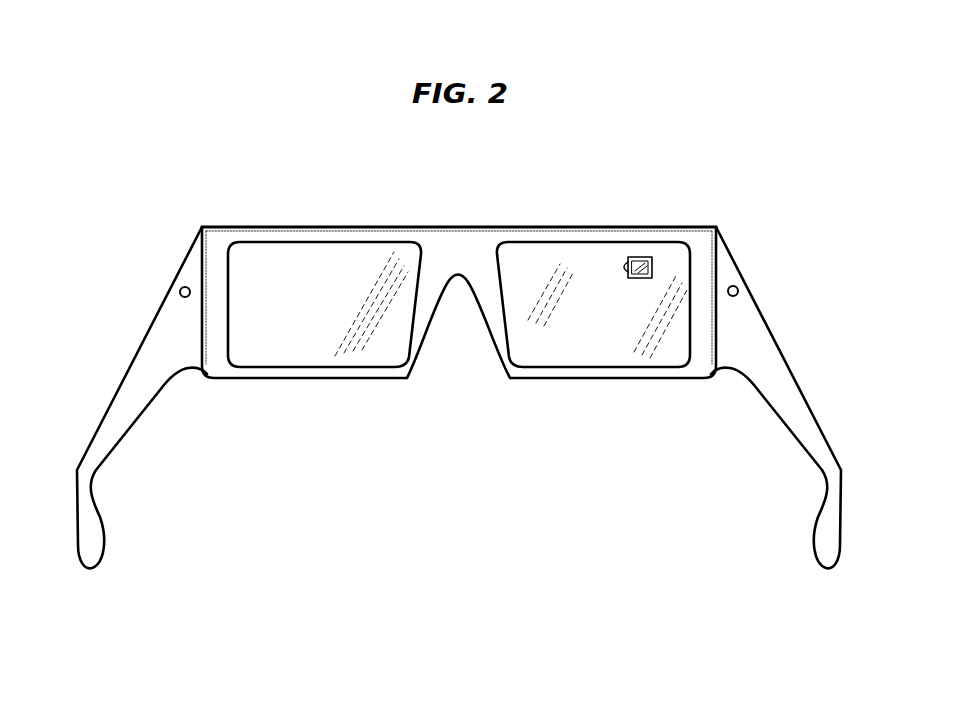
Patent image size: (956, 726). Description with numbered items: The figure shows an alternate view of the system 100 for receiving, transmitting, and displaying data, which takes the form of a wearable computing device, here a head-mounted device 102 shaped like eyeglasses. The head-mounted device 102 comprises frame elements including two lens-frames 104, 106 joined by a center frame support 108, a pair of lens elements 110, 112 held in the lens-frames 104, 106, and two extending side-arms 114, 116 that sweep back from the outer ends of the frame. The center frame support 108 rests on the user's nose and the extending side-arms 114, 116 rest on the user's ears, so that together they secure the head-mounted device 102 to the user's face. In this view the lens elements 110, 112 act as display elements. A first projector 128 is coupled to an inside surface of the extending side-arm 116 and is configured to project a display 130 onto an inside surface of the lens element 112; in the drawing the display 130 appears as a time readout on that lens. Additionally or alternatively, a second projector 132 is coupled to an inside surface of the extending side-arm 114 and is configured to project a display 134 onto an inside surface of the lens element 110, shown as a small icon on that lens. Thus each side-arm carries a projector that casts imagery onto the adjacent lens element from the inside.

The system 100 is at (656, 439).
The head-mounted device 102 is at (253, 214).
The lens-frame 104 is at (673, 381).
The lens-frame 106 is at (245, 381).
The center frame support 108 is at (455, 226).
The lens element 110 is at (612, 368).
The lens element 112 is at (305, 369).
The extending side-arm 114 is at (786, 359).
The extending side-arm 116 is at (133, 359).
The first projector 128 is at (181, 287).
The display 130 is at (312, 270).
The second projector 132 is at (737, 286).
The display 134 is at (628, 277).